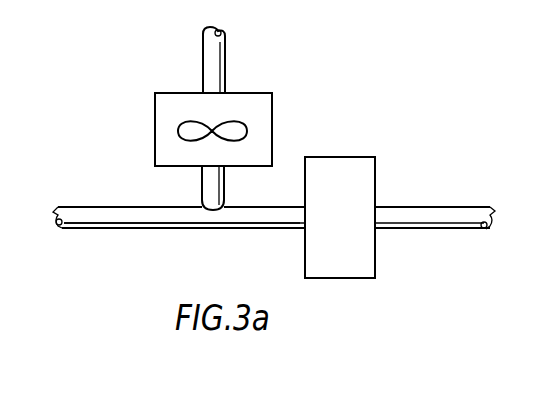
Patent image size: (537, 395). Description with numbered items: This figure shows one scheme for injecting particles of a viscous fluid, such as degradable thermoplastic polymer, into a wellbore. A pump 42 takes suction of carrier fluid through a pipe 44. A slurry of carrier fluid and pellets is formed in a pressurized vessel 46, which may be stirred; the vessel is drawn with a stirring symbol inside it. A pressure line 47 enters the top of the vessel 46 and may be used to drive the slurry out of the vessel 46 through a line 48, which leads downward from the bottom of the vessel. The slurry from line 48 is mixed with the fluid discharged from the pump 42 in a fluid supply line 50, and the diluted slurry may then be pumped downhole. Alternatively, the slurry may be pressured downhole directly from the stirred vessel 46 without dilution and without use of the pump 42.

The pump 42 is at (360, 263).
The pipe 44 is at (410, 212).
The pressurized vessel 46 is at (262, 113).
The pressure line 47 is at (220, 59).
The line 48 is at (208, 188).
The fluid supply line 50 is at (158, 219).